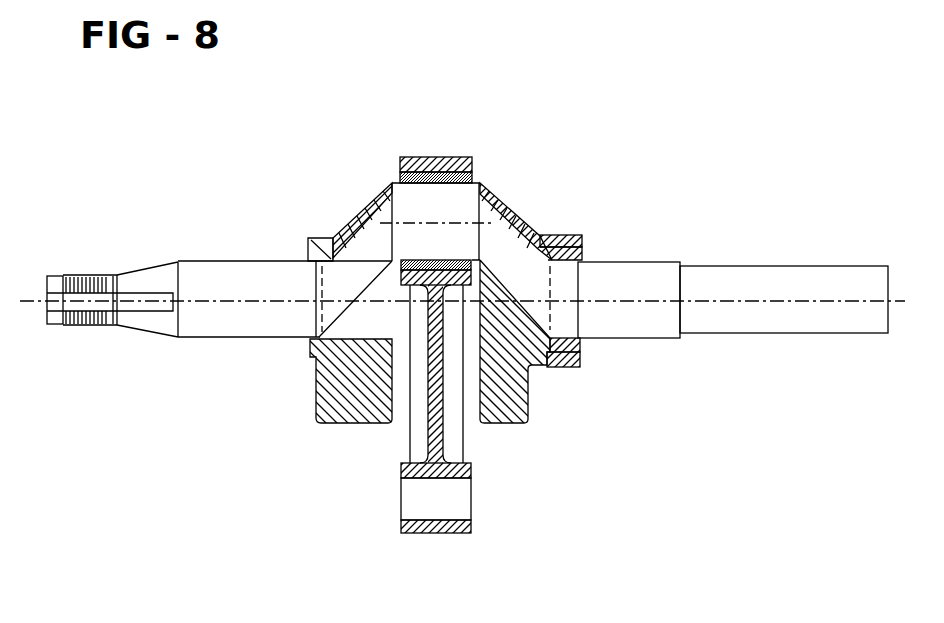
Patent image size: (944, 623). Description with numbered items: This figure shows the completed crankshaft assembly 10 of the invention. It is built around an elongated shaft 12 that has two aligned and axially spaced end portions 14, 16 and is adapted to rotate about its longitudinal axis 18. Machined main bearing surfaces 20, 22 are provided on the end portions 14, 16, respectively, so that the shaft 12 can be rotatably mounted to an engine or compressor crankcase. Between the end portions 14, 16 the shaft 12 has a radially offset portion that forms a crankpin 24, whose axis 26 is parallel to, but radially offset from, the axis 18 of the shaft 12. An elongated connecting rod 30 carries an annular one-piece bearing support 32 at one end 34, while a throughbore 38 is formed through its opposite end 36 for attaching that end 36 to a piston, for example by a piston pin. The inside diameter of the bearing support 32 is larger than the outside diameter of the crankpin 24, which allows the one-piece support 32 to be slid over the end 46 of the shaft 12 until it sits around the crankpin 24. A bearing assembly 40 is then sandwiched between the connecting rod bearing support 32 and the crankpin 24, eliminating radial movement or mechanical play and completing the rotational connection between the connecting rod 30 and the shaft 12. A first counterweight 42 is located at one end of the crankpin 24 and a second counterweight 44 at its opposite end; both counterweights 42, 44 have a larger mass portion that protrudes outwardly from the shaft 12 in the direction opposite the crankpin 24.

The crankshaft assembly 10 is at (607, 160).
The elongated shaft 12 is at (200, 340).
The end portion 14 is at (207, 270).
The end portion 16 is at (740, 323).
The longitudinal axis 18 is at (807, 300).
The main bearing surface 20 is at (282, 257).
The main bearing surface 22 is at (660, 260).
The crankpin 24 is at (468, 203).
The crankpin axis 26 is at (402, 215).
The connecting rod 30 is at (432, 423).
The annular one-piece bearing support 32 is at (460, 157).
The connecting rod end 34 is at (420, 285).
The opposite connecting rod end 36 is at (428, 535).
The throughbore 38 is at (455, 520).
The bearing assembly 40 is at (408, 158).
The first counterweight 42 is at (517, 403).
The second counterweight 44 is at (343, 407).
The shaft end 46 is at (47, 287).